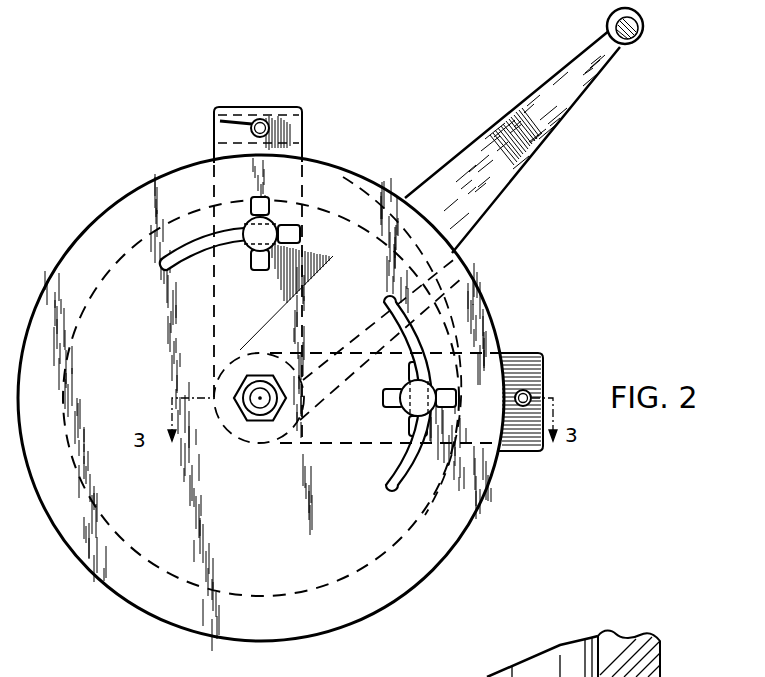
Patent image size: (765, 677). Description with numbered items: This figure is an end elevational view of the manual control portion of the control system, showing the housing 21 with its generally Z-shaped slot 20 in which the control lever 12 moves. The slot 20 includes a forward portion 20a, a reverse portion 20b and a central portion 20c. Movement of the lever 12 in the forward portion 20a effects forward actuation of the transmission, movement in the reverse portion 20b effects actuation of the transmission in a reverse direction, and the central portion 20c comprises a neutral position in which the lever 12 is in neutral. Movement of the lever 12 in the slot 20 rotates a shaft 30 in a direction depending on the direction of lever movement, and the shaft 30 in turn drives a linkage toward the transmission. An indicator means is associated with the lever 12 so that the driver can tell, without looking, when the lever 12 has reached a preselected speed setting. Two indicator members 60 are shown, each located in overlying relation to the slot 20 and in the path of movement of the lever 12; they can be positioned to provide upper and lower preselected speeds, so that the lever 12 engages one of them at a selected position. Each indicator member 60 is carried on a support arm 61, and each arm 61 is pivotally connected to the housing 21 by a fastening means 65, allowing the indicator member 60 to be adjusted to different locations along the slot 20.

The lever 12 is at (640, 30).
The slot 20 is at (358, 176).
The forward portion of the slot 20a is at (481, 284).
The reverse portion of the slot 20b is at (488, 456).
The central portion of the slot 20c is at (512, 353).
The housing 21 is at (473, 521).
The shaft 30 is at (351, 344).
The indicator member 60 is at (300, 131).
The support arm 61 is at (211, 158).
The fastening means 65 is at (272, 375).